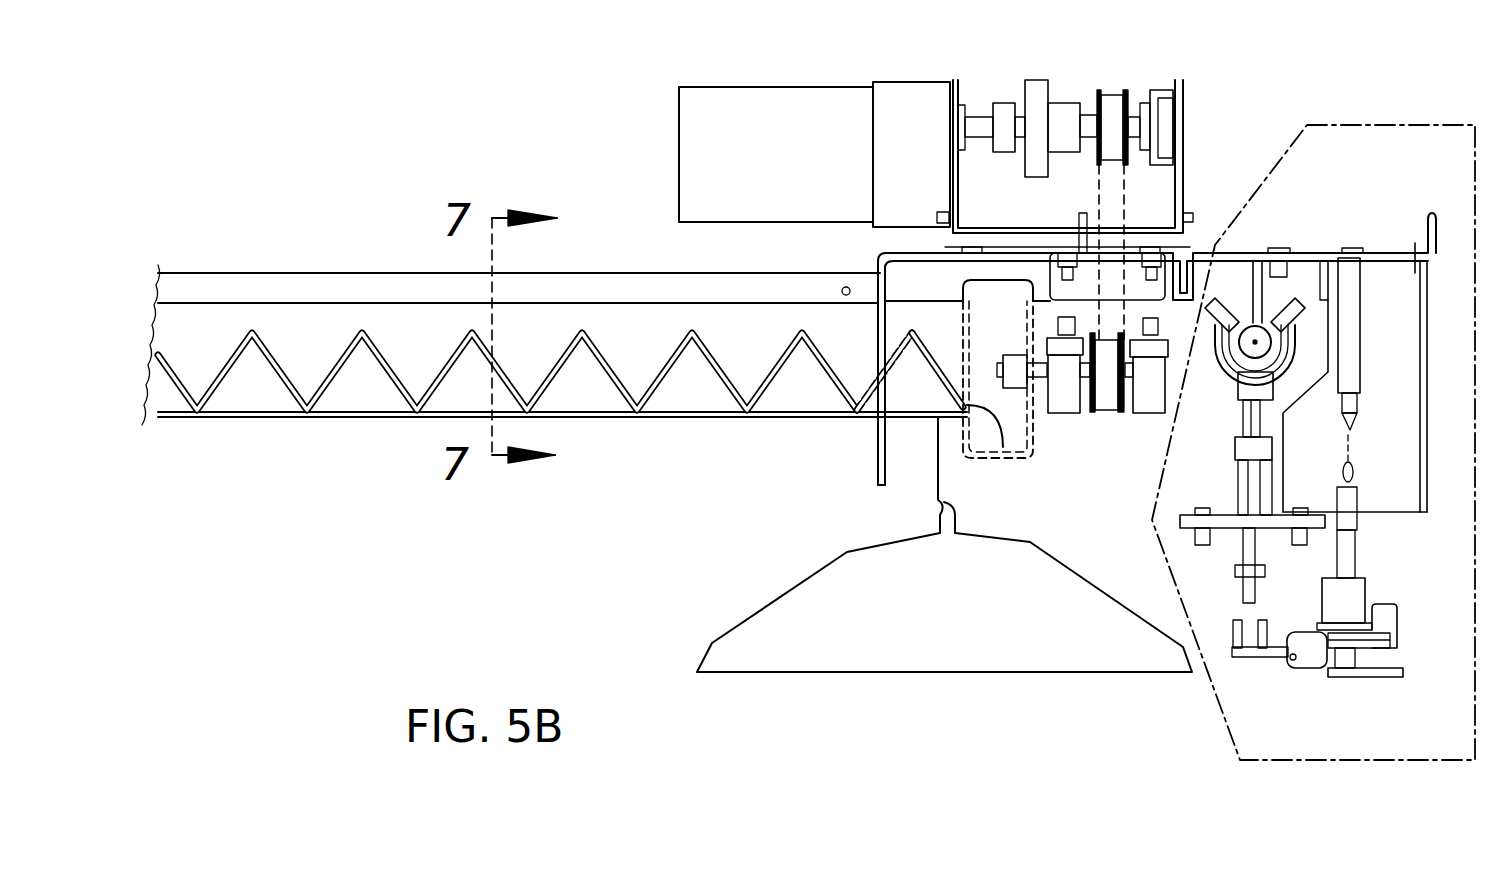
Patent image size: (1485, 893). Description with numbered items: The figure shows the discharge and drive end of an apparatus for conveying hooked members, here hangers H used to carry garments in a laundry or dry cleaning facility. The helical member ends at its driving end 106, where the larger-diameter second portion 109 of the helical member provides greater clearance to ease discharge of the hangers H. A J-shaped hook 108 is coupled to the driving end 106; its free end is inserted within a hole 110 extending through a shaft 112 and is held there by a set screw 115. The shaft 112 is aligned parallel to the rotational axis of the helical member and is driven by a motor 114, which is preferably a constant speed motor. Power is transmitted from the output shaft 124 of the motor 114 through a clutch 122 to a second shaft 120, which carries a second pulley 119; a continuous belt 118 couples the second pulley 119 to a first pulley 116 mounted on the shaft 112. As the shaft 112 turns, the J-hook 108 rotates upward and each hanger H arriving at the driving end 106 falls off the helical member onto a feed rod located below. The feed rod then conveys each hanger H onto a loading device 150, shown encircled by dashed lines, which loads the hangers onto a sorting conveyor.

The driving end 106 is at (925, 370).
The J-shaped hook 108 is at (977, 462).
The second portion 109 is at (582, 343).
The hole 110 is at (1018, 363).
The shaft 112 is at (1036, 405).
The motor 114 is at (773, 82).
The set screw 115 is at (998, 372).
The first pulley 116 is at (1127, 413).
The continuous belt 118 is at (1097, 185).
The second pulley 119 is at (1131, 97).
The second shaft 120 is at (1097, 112).
The clutch 122 is at (1037, 80).
The output shaft 124 is at (975, 117).
The loading device 150 is at (1210, 683).
The hanger H is at (863, 673).